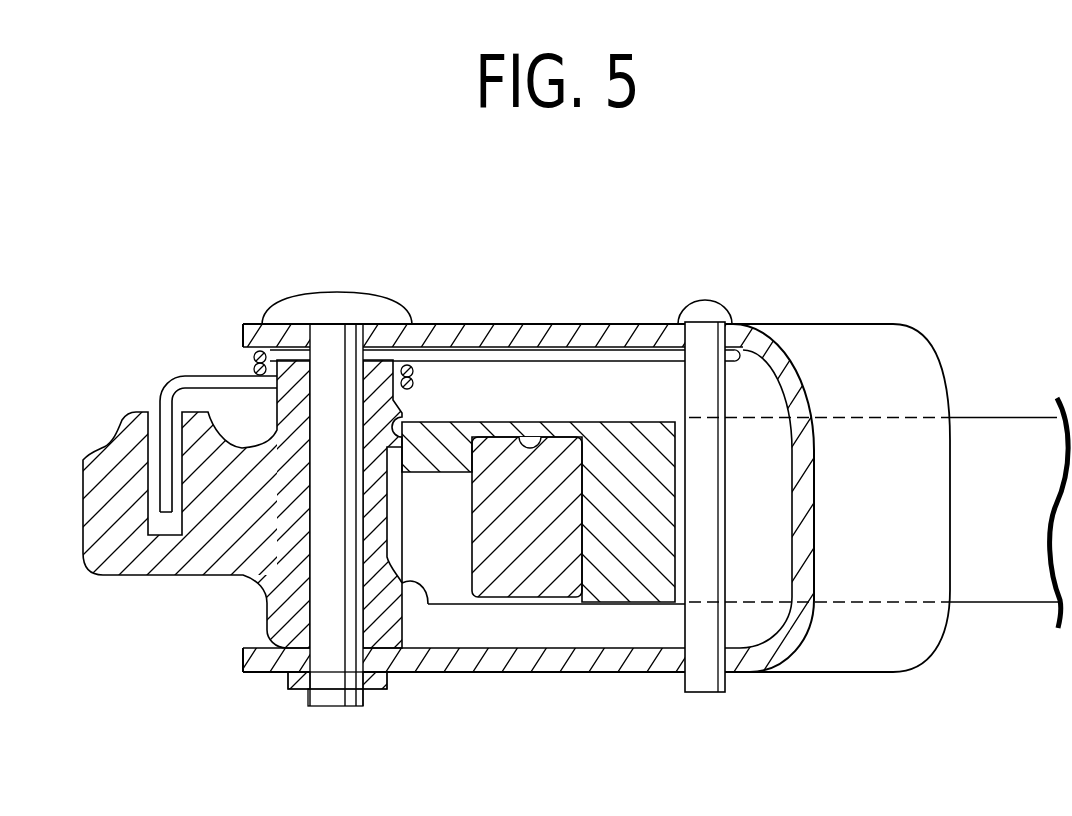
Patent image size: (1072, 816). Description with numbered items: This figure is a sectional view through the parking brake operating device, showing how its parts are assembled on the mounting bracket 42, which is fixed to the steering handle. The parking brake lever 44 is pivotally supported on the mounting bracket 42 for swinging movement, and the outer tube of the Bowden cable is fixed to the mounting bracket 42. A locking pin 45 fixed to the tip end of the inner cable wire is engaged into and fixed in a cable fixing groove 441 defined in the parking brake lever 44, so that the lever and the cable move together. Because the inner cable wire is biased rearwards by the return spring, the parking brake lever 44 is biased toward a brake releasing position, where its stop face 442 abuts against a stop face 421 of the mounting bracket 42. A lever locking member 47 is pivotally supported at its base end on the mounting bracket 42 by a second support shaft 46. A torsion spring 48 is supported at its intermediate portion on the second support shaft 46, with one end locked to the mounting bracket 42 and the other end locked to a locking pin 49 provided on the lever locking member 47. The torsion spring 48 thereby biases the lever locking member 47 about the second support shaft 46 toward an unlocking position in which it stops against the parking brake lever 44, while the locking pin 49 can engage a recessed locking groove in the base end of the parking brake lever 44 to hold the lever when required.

The mounting bracket 42 is at (184, 580).
The stop face 421 is at (428, 606).
The parking brake lever 44 is at (978, 411).
The cable fixing groove 441 is at (538, 455).
The stop face 442 is at (396, 413).
The locking pin 45 is at (510, 577).
The second support shaft 46 is at (336, 344).
The lever locking member 47 is at (496, 311).
The torsion spring 48 is at (212, 379).
The locking pin 49 is at (706, 507).